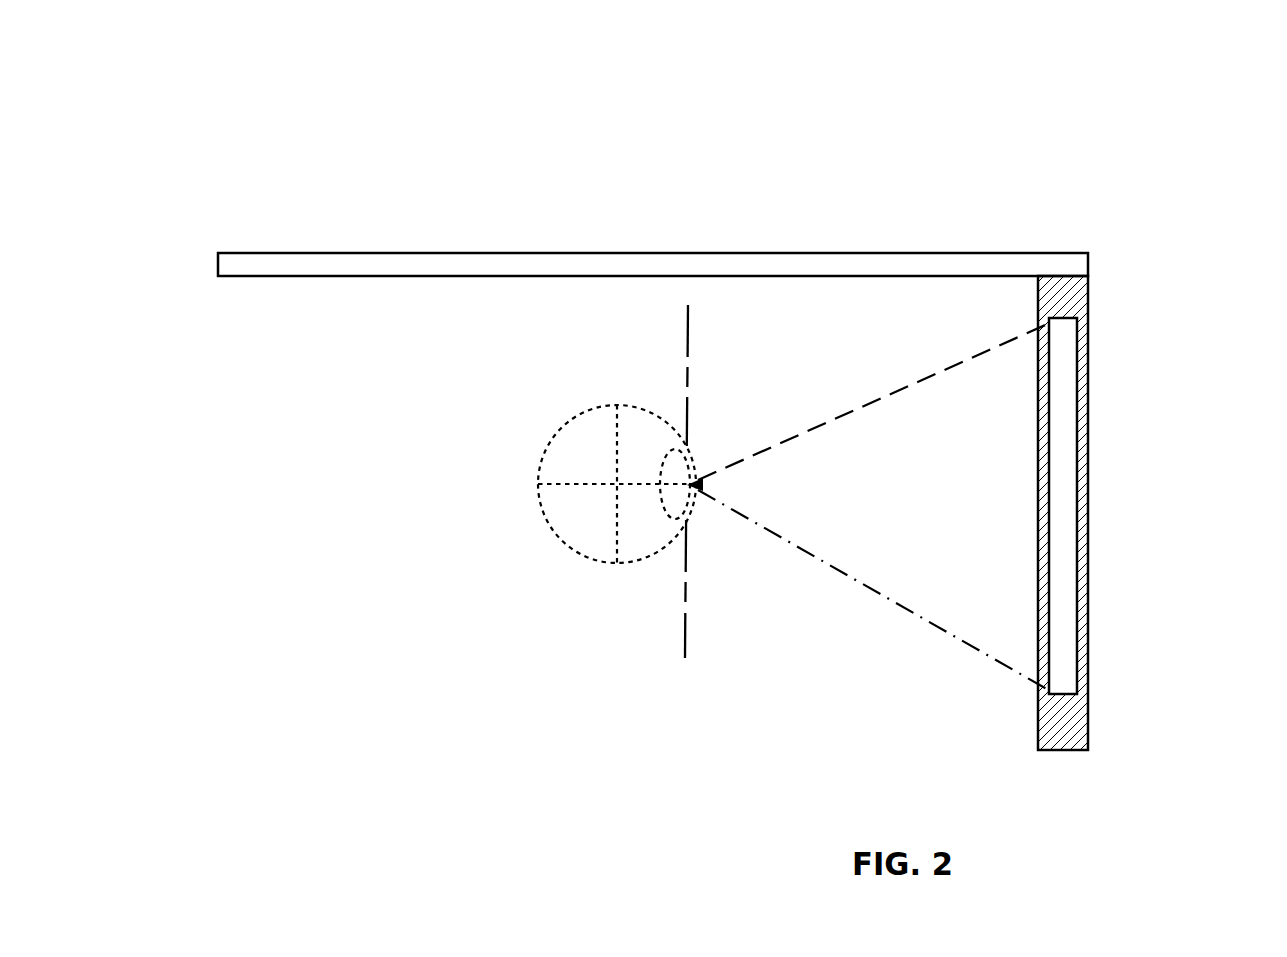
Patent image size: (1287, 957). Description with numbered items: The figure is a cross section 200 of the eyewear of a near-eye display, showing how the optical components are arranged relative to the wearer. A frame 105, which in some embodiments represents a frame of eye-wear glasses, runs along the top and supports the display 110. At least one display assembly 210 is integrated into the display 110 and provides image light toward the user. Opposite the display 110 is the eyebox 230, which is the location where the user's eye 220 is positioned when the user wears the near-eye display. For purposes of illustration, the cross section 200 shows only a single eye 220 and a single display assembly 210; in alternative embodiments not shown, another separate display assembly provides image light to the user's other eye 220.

The cross section 200 is at (125, 67).
The frame 105 is at (944, 253).
The display assembly 210 is at (1058, 395).
The display 110 is at (1090, 628).
The eye 220 is at (578, 418).
The eyebox 230 is at (683, 582).